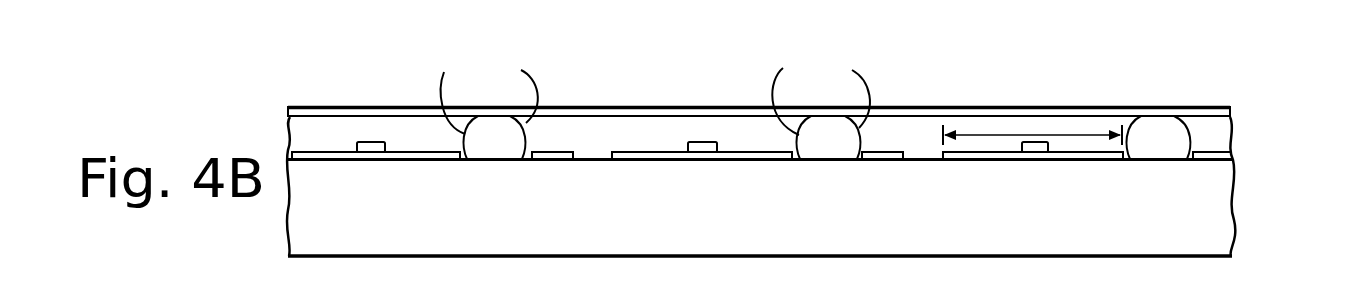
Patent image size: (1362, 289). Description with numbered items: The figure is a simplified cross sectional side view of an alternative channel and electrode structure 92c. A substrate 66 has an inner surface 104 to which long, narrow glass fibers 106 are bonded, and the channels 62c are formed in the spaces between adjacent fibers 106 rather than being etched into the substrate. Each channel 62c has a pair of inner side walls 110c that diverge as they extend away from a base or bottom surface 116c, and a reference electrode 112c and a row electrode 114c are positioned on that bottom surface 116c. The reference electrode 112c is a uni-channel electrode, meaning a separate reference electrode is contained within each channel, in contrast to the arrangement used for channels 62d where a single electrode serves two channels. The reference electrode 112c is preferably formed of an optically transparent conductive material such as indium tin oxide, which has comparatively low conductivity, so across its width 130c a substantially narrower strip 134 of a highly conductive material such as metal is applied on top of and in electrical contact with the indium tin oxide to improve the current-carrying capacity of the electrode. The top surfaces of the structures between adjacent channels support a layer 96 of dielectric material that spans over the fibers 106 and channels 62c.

The substrate 66 is at (1193, 230).
The inner surface 104 is at (583, 159).
The row electrode 114c is at (557, 161).
The strip 134 is at (372, 141).
The glass fiber 106 is at (494, 146).
The inner side wall 110c is at (655, 91).
The channel 62c is at (408, 139).
The reference electrode 112c is at (323, 152).
The bottom surface 116c is at (602, 158).
The width 130c is at (1093, 133).
The layer of dielectric material 96 is at (1200, 107).
The electrode structure 92c is at (452, 260).
The channel 62d is at (670, 283).